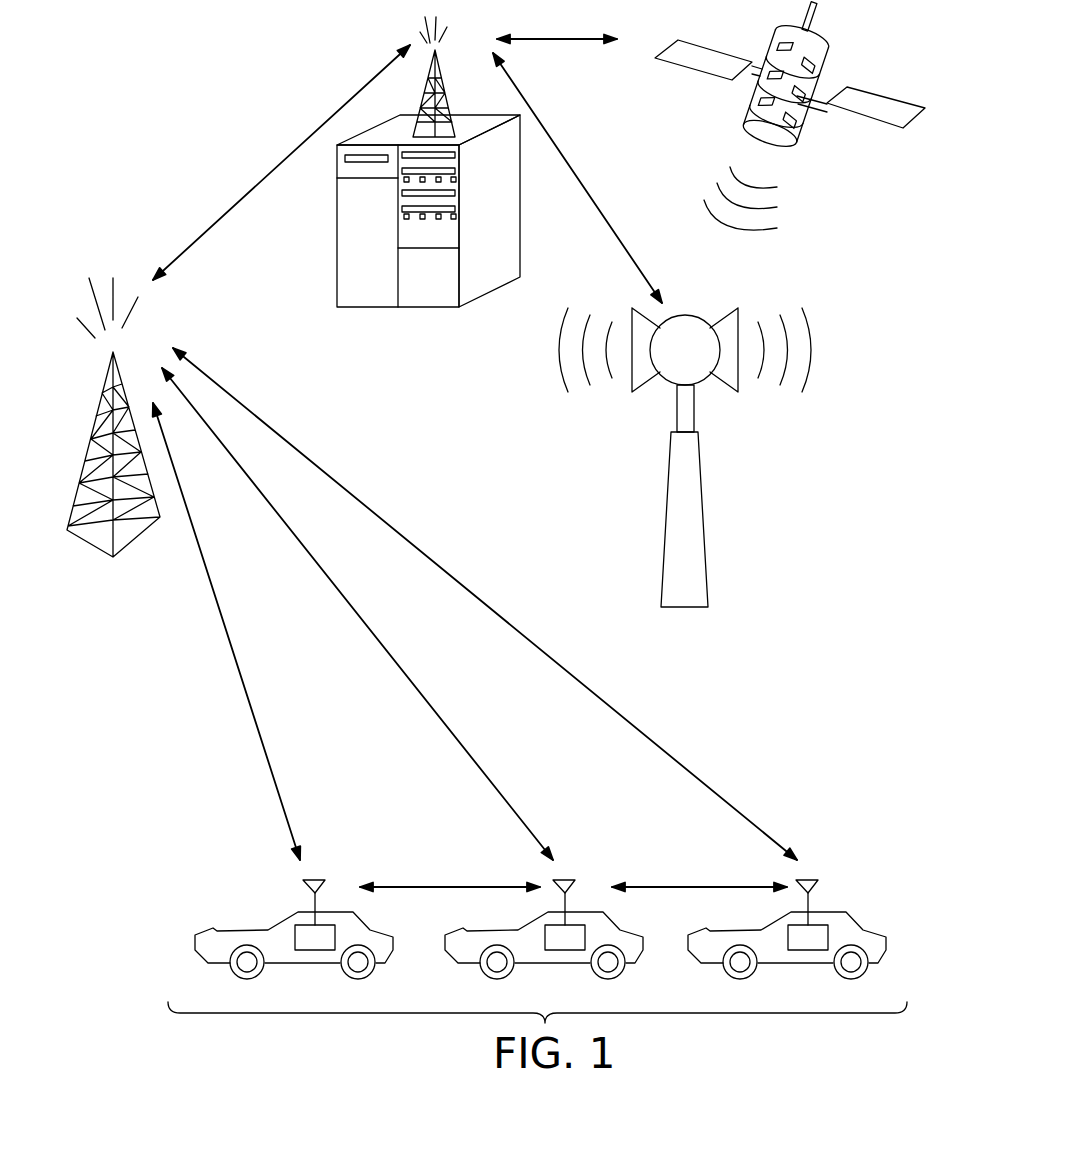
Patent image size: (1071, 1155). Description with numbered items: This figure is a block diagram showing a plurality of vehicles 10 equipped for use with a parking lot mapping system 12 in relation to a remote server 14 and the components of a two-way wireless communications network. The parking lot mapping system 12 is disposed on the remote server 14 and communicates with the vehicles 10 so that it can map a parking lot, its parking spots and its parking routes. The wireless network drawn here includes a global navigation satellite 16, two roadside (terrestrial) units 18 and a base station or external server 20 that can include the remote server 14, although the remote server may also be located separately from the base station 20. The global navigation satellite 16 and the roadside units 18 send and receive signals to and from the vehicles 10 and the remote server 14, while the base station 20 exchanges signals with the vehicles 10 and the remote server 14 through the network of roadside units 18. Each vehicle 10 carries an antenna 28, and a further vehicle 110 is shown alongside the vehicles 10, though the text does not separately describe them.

The vehicle 10 is at (368, 918).
The vehicle 110 is at (818, 938).
The parking lot mapping system 12 is at (463, 198).
The remote server 14 is at (460, 230).
The global navigation satellite 16 is at (828, 40).
The roadside unit 18 is at (702, 489).
The base station 20 is at (451, 189).
The vehicle antenna / transceiver 28 is at (328, 918).